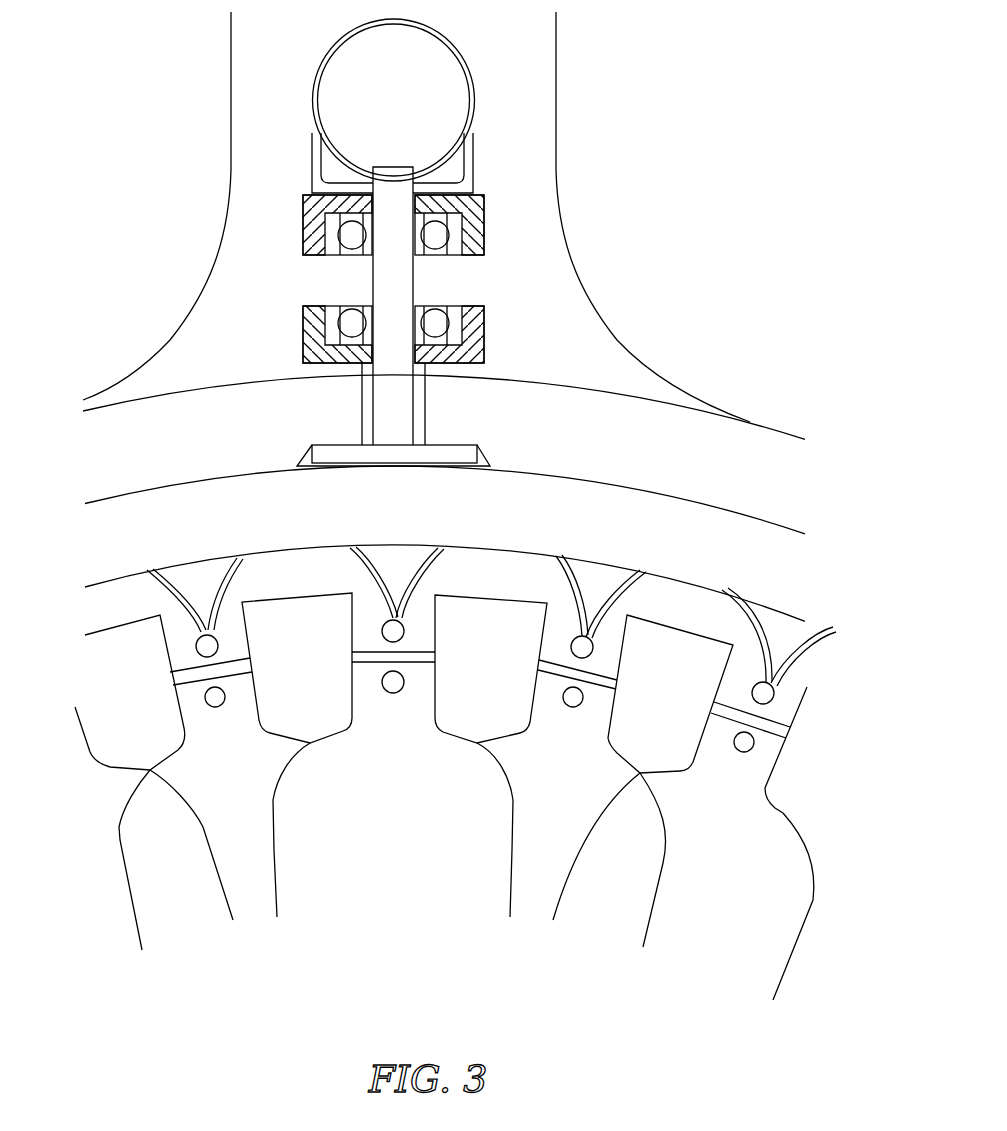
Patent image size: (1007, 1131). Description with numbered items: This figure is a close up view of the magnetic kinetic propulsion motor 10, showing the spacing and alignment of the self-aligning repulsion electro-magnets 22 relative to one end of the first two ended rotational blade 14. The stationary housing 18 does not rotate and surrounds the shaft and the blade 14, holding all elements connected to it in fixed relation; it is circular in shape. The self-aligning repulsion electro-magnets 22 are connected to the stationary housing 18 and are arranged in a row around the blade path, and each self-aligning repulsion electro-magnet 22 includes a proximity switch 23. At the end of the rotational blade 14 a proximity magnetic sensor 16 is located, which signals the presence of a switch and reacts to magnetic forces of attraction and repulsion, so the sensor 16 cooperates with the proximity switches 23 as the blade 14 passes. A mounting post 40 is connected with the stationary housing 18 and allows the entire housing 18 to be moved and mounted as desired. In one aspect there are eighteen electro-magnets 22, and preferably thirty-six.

The magnetic kinetic propulsion motor 10 is at (742, 448).
The first two ended rotational blade 14 is at (401, 837).
The proximity magnetic sensor 16 is at (226, 697).
The stationary housing 18 is at (139, 548).
The self-aligning repulsion electro-magnets 22 is at (232, 623).
The proximity switch 23 is at (219, 648).
The mounting post 40 is at (429, 428).